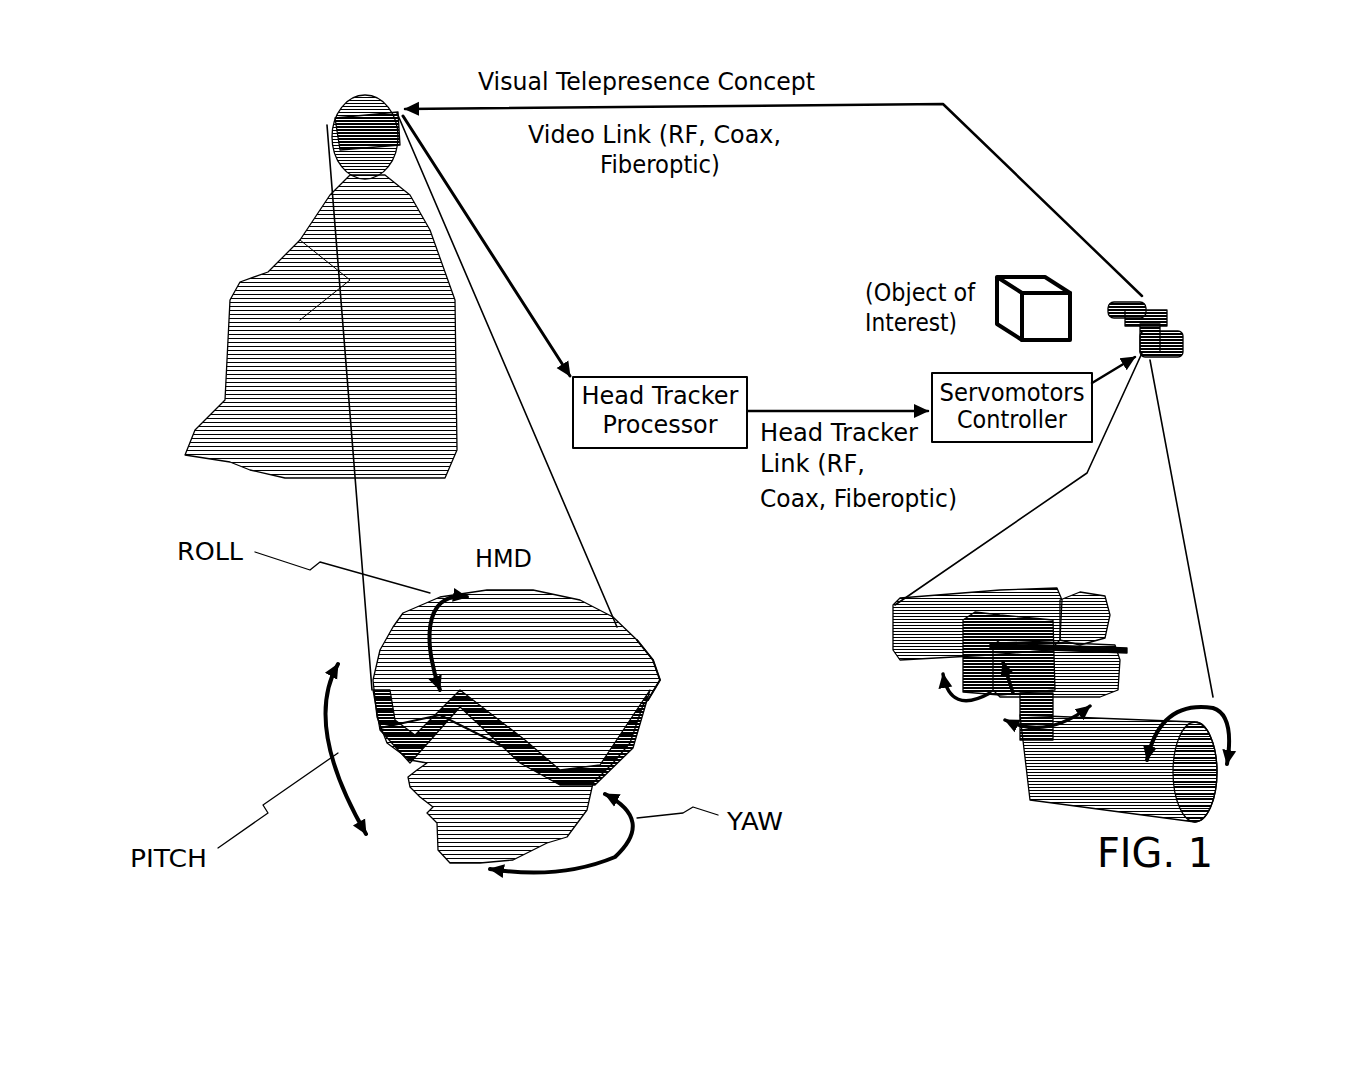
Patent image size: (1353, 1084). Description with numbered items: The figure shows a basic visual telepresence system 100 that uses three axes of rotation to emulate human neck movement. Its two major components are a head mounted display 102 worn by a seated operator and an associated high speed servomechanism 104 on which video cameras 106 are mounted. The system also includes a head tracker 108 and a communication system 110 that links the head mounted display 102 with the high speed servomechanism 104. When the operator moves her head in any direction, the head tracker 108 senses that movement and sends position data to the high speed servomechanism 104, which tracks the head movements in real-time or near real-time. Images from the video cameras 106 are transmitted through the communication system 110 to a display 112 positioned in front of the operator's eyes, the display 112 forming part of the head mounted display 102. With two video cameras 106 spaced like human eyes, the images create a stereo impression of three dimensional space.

The visual telepresence system 100 is at (322, 825).
The head mounted display 102 is at (327, 127).
The high speed servomechanism 104 is at (1133, 678).
The video cameras 106 is at (1010, 602).
The head tracker 108 is at (630, 630).
The communication system 110 is at (840, 405).
The display 112 is at (393, 730).